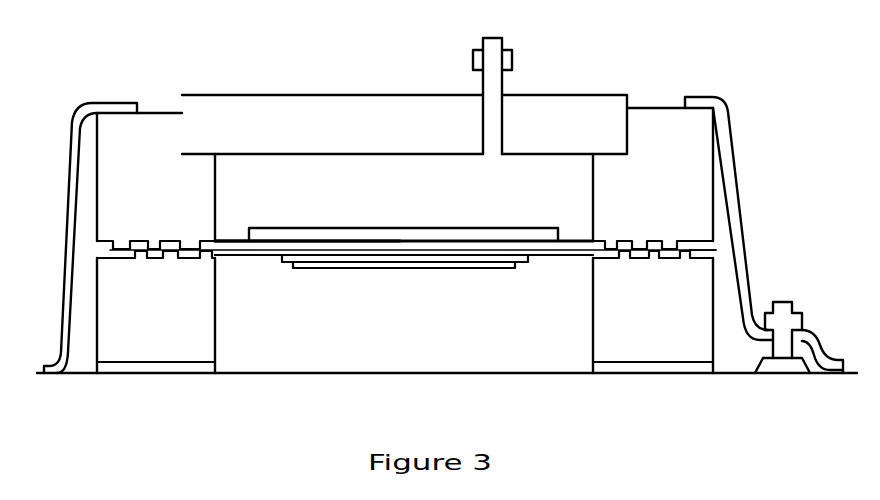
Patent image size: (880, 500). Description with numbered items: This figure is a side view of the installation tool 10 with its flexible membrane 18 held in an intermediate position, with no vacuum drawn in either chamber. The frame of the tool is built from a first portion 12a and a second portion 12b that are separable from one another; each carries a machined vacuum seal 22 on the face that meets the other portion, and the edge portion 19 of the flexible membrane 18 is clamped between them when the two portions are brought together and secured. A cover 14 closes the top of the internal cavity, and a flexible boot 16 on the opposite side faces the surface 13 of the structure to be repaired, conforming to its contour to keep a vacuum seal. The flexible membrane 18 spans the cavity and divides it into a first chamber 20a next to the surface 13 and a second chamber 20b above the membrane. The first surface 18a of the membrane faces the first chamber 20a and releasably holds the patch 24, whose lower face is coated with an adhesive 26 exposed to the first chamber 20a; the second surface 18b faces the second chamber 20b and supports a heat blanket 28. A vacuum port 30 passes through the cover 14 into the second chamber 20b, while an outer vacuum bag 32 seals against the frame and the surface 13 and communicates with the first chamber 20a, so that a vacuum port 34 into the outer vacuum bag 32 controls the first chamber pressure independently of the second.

The installation tool 10 is at (653, 56).
The first portion of the frame 12a is at (608, 334).
The second portion of the frame 12b is at (592, 160).
The surface 13 is at (572, 375).
The cover 14 is at (546, 103).
The boot 16 is at (131, 365).
The flexible membrane 18 is at (578, 238).
The first surface of the flexible membrane 18a is at (232, 258).
The second surface of the flexible membrane 18b is at (236, 238).
The edge portion of the flexible membrane 19 is at (690, 248).
The first chamber 20a is at (465, 358).
The second chamber 20b is at (409, 165).
The machined vacuum seal 22 is at (153, 240).
The patch 24 is at (338, 262).
The adhesive 26 is at (413, 270).
The heat blanket 28 is at (441, 232).
The vacuum port 30 is at (473, 60).
The outer vacuum bag 32 is at (113, 102).
The vacuum port 34 is at (793, 320).